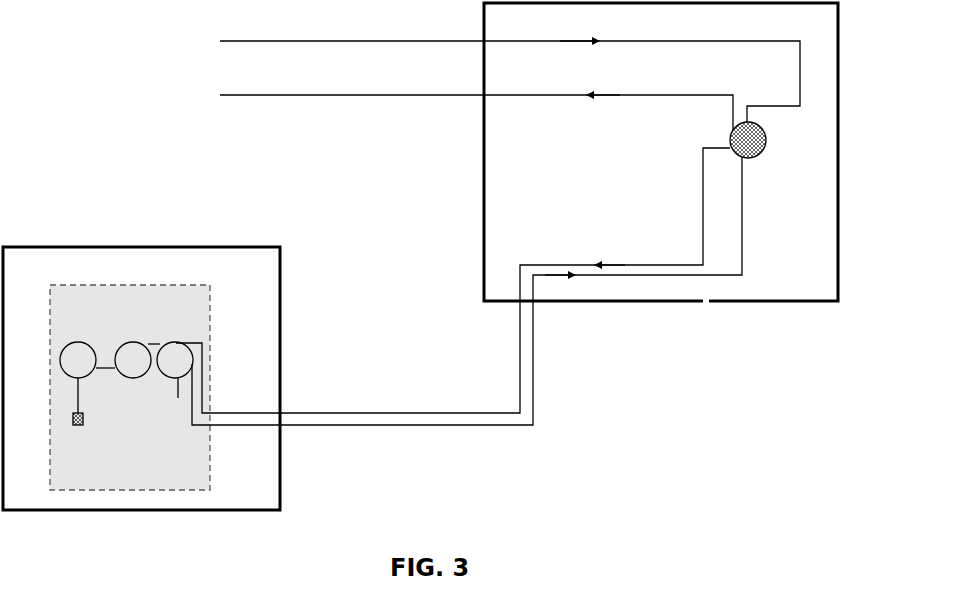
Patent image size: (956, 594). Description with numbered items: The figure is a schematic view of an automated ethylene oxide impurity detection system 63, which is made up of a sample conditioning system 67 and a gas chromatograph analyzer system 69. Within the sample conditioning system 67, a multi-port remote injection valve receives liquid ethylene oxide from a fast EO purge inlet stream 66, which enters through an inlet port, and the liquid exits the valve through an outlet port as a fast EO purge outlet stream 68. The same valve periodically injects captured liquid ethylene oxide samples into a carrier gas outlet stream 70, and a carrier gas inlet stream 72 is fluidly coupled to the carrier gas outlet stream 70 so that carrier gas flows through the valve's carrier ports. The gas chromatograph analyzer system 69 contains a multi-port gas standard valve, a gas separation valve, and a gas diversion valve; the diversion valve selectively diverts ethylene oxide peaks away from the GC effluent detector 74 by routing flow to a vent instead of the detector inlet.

The automated ethylene oxide impurity detection system 63 is at (117, 66).
The fast EO purge inlet stream 66 is at (486, 77).
The sample conditioning system 67 is at (661, 152).
The fast EO purge outlet stream 68 is at (453, 108).
The gas chromatograph analyzer system 69 is at (141, 378).
The carrier gas outlet stream 70 is at (453, 280).
The carrier gas inlet stream 72 is at (467, 315).
The GC effluent detector 74 is at (130, 387).